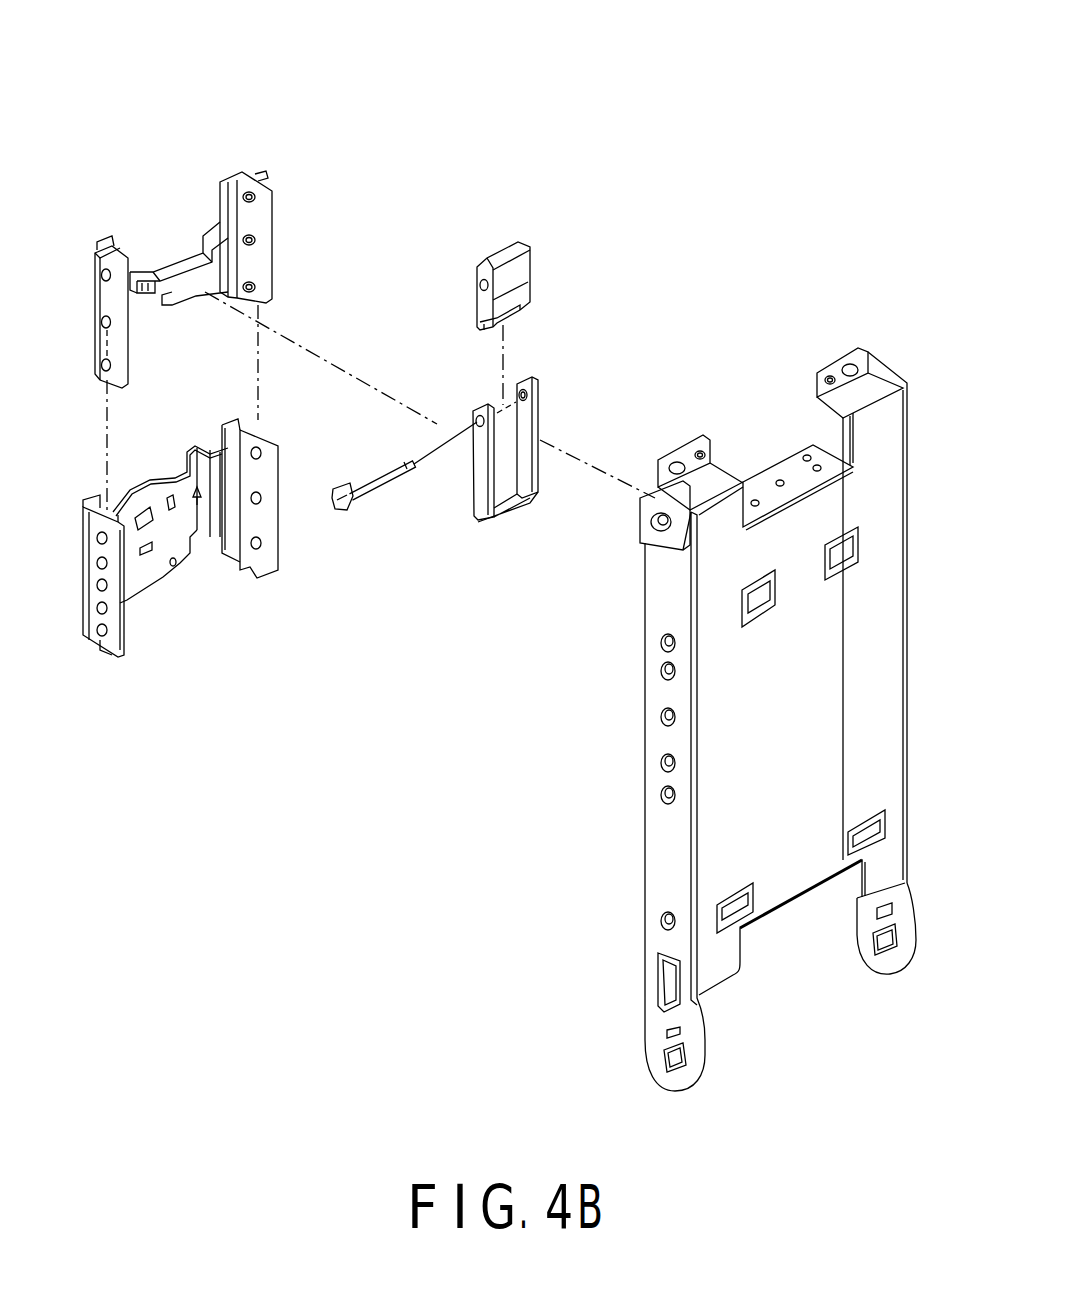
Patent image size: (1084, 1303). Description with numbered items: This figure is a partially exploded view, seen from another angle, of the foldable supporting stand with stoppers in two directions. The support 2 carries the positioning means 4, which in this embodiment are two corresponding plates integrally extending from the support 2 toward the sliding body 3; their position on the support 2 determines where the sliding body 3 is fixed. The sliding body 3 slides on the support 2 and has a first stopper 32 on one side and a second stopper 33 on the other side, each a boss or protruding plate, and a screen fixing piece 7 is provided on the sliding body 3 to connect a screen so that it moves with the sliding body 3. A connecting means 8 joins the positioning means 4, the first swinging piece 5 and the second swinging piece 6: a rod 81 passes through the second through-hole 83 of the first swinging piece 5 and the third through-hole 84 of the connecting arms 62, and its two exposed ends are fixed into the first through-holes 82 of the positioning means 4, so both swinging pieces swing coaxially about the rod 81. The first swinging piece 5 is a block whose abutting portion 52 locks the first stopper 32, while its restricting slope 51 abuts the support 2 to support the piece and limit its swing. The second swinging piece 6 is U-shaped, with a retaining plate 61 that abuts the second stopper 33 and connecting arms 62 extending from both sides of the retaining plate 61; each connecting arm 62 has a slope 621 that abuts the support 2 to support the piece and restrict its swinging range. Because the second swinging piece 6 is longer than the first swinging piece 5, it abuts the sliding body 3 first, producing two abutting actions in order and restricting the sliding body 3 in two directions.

The support 2 is at (909, 358).
The sliding body 3 is at (260, 168).
The first stopper 32 is at (177, 262).
The second stopper 33 is at (158, 275).
The positioning means 4 is at (743, 604).
The first swinging piece 5 is at (483, 249).
The restricting slope 51 is at (524, 262).
The abutting portion 52 is at (480, 330).
The second swinging piece 6 is at (488, 538).
The retaining plate 61 is at (514, 508).
The connecting arms 62 is at (548, 452).
The slope 621 is at (538, 380).
The screen fixing piece 7 is at (204, 625).
The connecting means 8 is at (358, 533).
The rod 81 is at (385, 478).
The first through-holes 82 is at (742, 597).
The second through-hole 83 is at (481, 286).
The third through-hole 84 is at (543, 395).